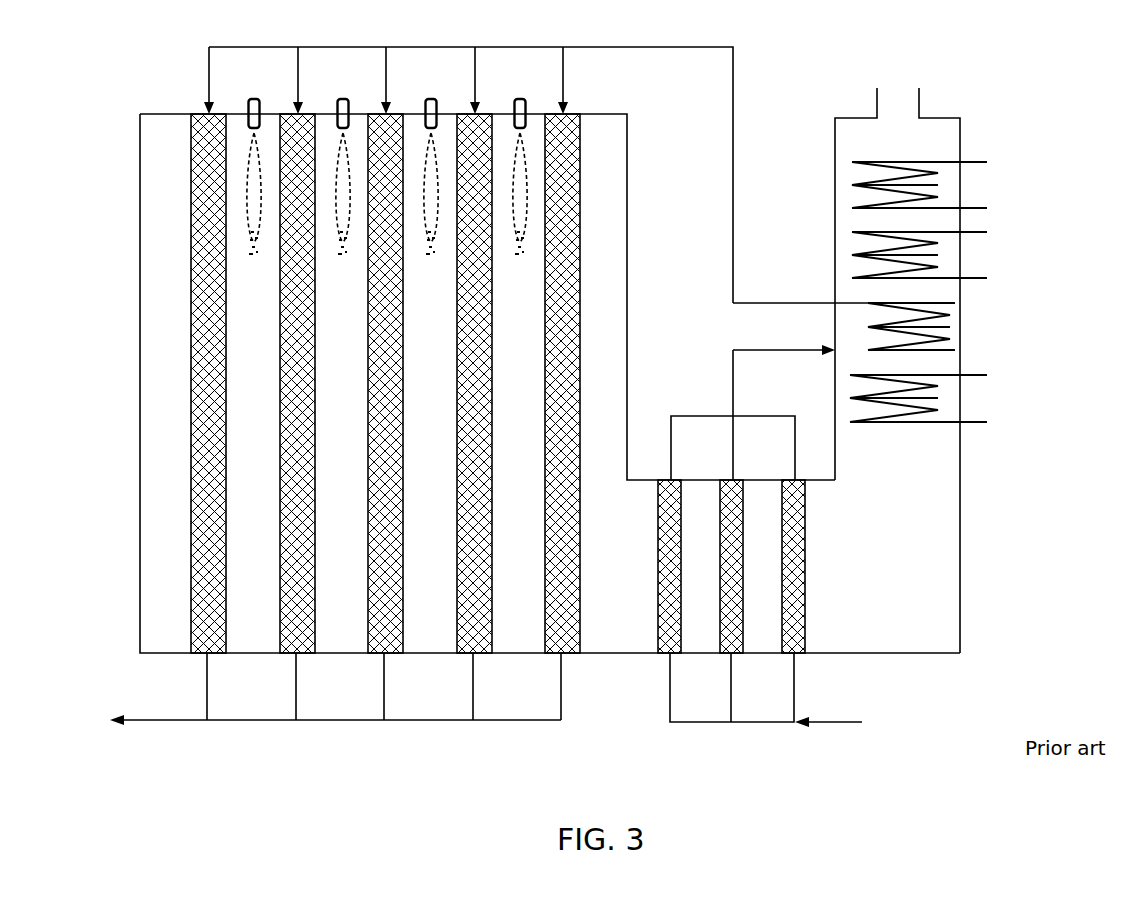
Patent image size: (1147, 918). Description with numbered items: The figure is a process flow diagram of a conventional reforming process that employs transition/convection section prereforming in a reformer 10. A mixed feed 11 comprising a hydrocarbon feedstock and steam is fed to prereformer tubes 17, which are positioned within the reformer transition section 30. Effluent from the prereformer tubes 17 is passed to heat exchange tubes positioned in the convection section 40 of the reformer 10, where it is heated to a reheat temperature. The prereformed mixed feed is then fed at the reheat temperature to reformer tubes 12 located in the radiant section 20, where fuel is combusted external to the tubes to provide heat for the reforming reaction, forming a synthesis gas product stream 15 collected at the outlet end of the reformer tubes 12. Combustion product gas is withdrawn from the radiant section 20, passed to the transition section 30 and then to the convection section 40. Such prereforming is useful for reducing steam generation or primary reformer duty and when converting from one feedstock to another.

The reformer 10 is at (165, 86).
The mixed feed 11 is at (830, 724).
The reformer tubes 12 is at (190, 340).
The synthesis gas product stream 15 is at (174, 722).
The prereformer tubes 17 is at (657, 597).
The radiant section 20 is at (600, 277).
The transition section 30 is at (712, 552).
The convection section 40 is at (847, 220).